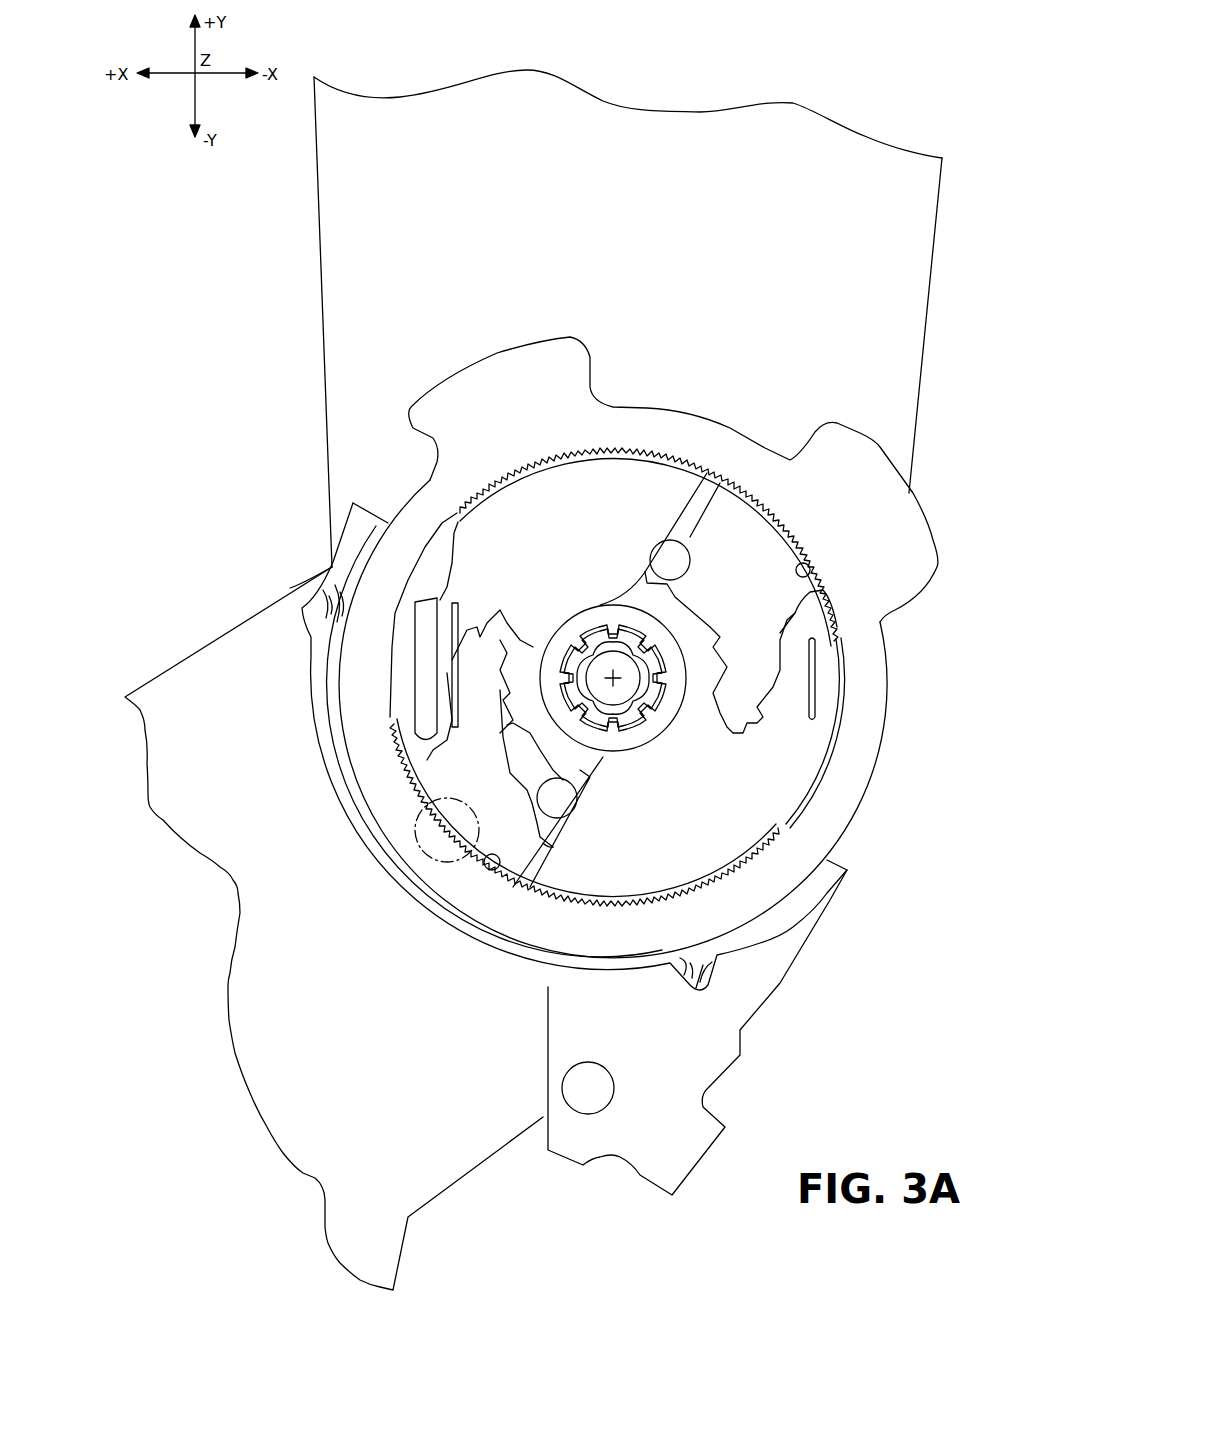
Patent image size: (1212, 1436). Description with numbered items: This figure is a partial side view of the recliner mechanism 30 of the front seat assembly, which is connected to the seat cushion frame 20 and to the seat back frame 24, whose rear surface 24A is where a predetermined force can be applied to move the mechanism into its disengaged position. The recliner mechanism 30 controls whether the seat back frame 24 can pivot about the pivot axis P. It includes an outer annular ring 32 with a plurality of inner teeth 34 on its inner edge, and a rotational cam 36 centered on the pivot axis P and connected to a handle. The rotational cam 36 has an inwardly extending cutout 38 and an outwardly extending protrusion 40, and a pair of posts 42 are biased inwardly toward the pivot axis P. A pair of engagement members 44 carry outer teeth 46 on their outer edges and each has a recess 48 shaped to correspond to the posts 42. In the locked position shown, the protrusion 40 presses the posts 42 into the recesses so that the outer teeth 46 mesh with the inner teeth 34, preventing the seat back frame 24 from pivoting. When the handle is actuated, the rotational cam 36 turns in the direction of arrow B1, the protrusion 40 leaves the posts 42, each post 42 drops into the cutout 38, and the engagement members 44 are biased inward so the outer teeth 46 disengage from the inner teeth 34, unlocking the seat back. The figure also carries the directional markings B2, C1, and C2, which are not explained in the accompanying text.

The seat cushion frame 20 is at (199, 640).
The seat back frame 24 is at (922, 377).
The rear surface 24A is at (944, 193).
The recliner mechanism 30 is at (693, 405).
The outer annular ring 32 is at (873, 723).
The inner teeth 34 is at (697, 467).
The rotational cam 36 is at (563, 642).
The cutout 38 is at (690, 607).
The protrusion 40 is at (640, 567).
The posts 42 is at (663, 540).
The engagement members 44 is at (611, 695).
The outer teeth 46 is at (687, 550).
The recess 48 is at (543, 843).
The pivot axis P is at (613, 680).
The arrow B1 is at (680, 667).
The rotation direction B2 is at (695, 645).
The clearance direction C1 is at (773, 517).
The clearance direction C2 is at (745, 521).